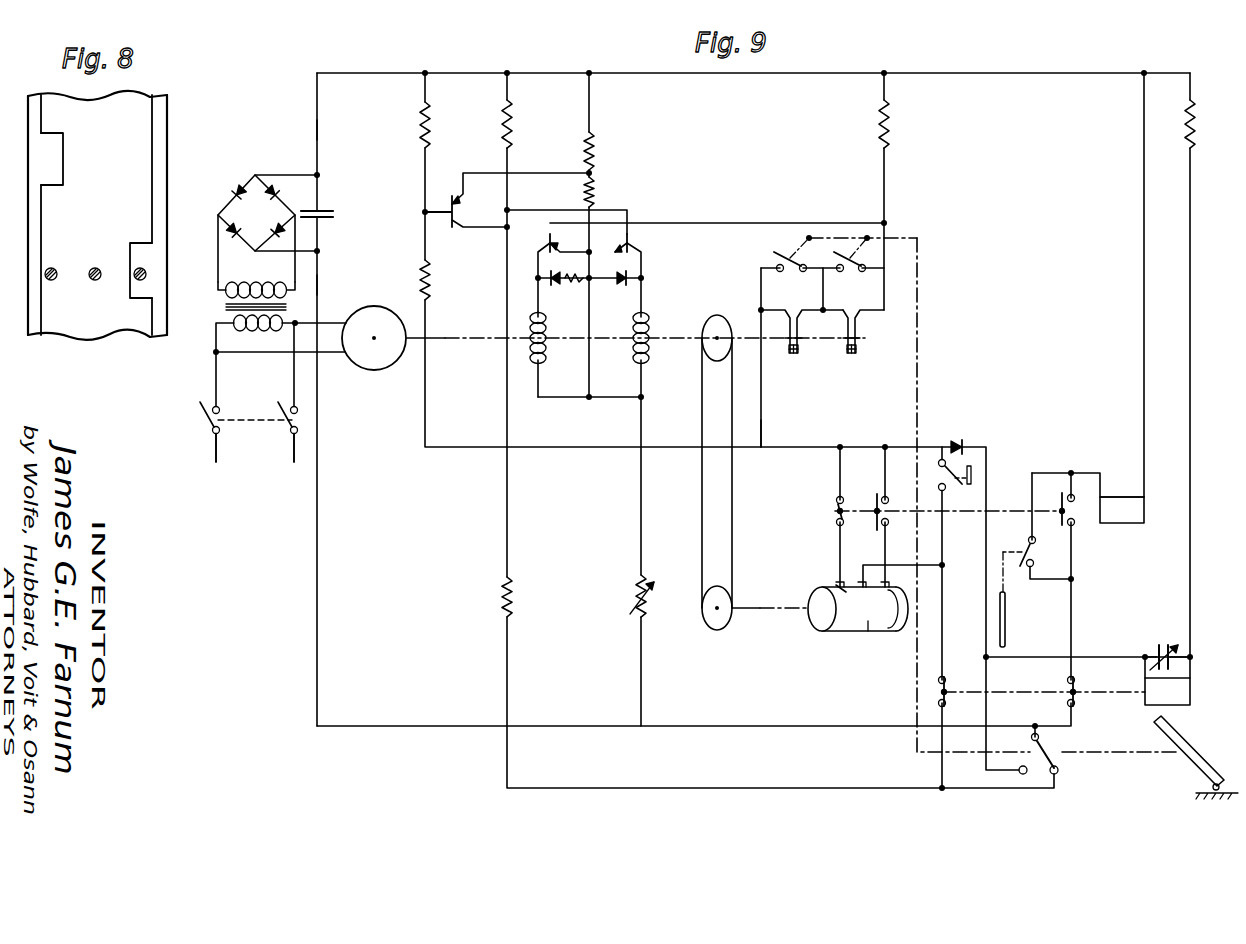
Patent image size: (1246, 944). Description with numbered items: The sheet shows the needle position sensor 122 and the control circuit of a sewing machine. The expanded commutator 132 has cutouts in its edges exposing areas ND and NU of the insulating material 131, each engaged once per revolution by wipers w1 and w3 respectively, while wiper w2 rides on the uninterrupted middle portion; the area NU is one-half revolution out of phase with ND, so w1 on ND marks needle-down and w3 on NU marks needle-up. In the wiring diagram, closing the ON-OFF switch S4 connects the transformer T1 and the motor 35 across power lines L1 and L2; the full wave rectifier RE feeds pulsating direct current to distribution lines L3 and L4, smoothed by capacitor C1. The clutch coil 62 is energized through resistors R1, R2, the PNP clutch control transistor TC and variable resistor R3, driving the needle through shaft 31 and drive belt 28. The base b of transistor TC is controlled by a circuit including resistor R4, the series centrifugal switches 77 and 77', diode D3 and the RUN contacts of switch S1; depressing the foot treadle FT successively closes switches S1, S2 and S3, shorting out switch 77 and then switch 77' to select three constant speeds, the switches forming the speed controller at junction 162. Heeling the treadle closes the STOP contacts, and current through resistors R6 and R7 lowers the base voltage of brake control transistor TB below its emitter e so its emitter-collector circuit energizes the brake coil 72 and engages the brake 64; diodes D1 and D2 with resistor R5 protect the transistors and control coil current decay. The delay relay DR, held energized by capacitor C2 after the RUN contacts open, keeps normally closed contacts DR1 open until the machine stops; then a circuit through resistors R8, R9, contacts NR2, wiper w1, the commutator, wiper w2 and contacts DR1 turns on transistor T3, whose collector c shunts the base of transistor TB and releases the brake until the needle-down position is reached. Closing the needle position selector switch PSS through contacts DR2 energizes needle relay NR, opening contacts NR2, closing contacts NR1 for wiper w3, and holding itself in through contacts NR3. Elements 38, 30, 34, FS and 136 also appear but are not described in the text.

In FIG. 8, the insulating material 131 is at (166, 133).
In FIG. 8, the commutator 132 is at (148, 152).
In FIG. 9, the commutator 132 is at (866, 632).
In FIG. 8, the needle-down exposed area ND is at (56, 148).
In FIG. 9, the needle-down exposed area ND is at (834, 586).
In FIG. 8, the needle-up exposed area NU is at (138, 250).
In FIG. 9, the needle-up exposed area NU is at (886, 630).
In FIG. 8, the wiper w1 is at (55, 279).
In FIG. 9, the wiper w1 is at (829, 579).
In FIG. 8, the wiper w2 is at (93, 268).
In FIG. 9, the wiper w2 is at (862, 583).
In FIG. 8, the wiper w3 is at (136, 279).
In FIG. 9, the wiper w3 is at (890, 581).
In FIG. 9, the power distribution line L3 is at (322, 116).
In FIG. 9, the power distribution line L4 is at (322, 274).
In FIG. 9, the power line L1 is at (216, 461).
In FIG. 9, the power line L2 is at (293, 461).
In FIG. 9, the ON-OFF switch S4 is at (200, 420).
In FIG. 9, the transformer T1 is at (222, 310).
In FIG. 9, the full wave rectifier RE is at (253, 168).
In FIG. 9, the capacitor C1 is at (330, 220).
In FIG. 9, the resistor R8 is at (420, 118).
In FIG. 9, the resistor R9 is at (432, 283).
In FIG. 9, the resistor R6 is at (515, 127).
In FIG. 9, the resistor R1 is at (596, 150).
In FIG. 9, the resistor R2 is at (596, 190).
In FIG. 9, the resistor R4 is at (890, 126).
In FIG. 9, the resistor R7 is at (497, 601).
In FIG. 9, the variable resistor R3 is at (637, 593).
In FIG. 9, the resistor R5 is at (578, 272).
In FIG. 9, the control transistor T3 is at (456, 184).
In FIG. 9, the clutch control transistor TC is at (545, 232).
In FIG. 9, the brake control transistor TB is at (633, 268).
In FIG. 9, the base b is at (440, 187).
In FIG. 9, the emitter e is at (477, 191).
In FIG. 9, the collector c is at (478, 216).
In FIG. 9, the diode D1 is at (557, 288).
In FIG. 9, the diode D2 is at (620, 288).
In FIG. 9, the diode D3 is at (966, 424).
In FIG. 9, the motor 35 is at (372, 370).
In FIG. 9, the clutch coil 62 is at (529, 323).
In FIG. 9, the brake 64 is at (651, 314).
In FIG. 9, the clutch-brake unit 38 is at (528, 354).
In FIG. 9, the shaft 31 is at (671, 338).
In FIG. 9, the brake coil 72 is at (650, 352).
In FIG. 9, the drive pulley 30 is at (722, 316).
In FIG. 9, the drive belt 28 is at (732, 512).
In FIG. 9, the machine pulley 34 is at (703, 618).
In FIG. 9, the switch S2 is at (772, 250).
In FIG. 9, the switch S3 is at (852, 269).
In FIG. 9, the centrifugal switch 77 is at (802, 357).
In FIG. 9, the centrifugal switch 77' is at (871, 352).
In FIG. 9, the junction point 162 is at (764, 440).
In FIG. 9, the normally open contacts NR1 is at (869, 496).
In FIG. 9, the normally closed contacts NR2 is at (836, 510).
In FIG. 9, the normally open contacts NR3 is at (1062, 486).
In FIG. 9, the needle position relay NR is at (1128, 523).
In FIG. 9, the needle position sensor 122 is at (840, 636).
In FIG. 9, the foot switch FS is at (969, 485).
In FIG. 9, the needle position selector switch PSS is at (1038, 554).
In FIG. 9, the selector element 136 is at (1006, 628).
In FIG. 9, the capacitor C2 is at (1152, 647).
In FIG. 9, the delay relay DR is at (1150, 703).
In FIG. 9, the normally closed contacts DR1 is at (950, 674).
In FIG. 9, the normally closed contacts DR2 is at (1076, 680).
In FIG. 9, the treadle controlled switch S1 is at (1046, 753).
In FIG. 9, the RUN contacts RUN is at (1005, 782).
In FIG. 9, the STOP contacts STOP is at (1077, 785).
In FIG. 9, the foot treadle FT is at (1195, 751).